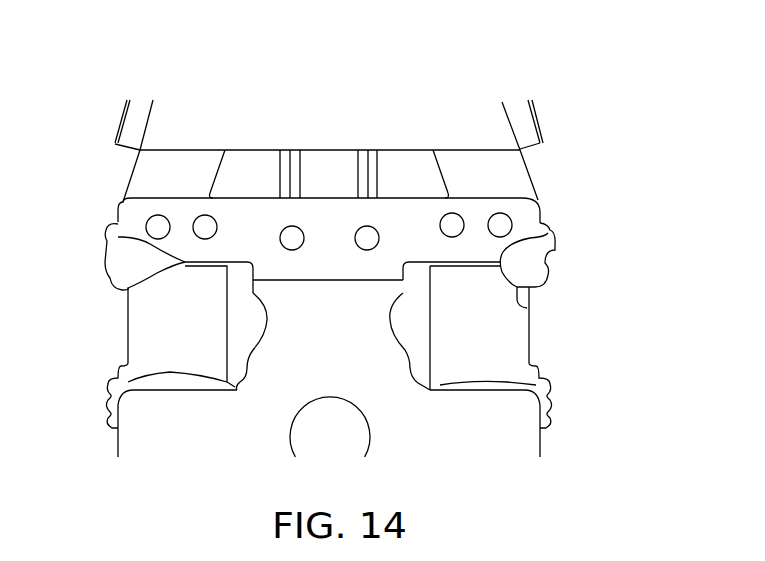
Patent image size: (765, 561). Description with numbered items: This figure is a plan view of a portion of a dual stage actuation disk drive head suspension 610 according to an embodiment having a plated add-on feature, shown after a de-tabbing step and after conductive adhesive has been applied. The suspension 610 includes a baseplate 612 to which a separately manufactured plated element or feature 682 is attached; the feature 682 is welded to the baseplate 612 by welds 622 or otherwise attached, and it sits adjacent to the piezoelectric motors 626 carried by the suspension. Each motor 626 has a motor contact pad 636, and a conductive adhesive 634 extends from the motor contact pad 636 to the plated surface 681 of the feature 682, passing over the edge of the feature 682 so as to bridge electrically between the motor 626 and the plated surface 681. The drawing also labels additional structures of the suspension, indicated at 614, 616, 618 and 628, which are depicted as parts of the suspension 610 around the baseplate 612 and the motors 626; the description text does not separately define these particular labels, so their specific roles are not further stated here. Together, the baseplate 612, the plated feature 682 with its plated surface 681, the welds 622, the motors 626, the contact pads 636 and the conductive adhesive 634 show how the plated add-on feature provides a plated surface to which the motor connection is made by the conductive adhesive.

The suspension 610 is at (207, 452).
The baseplate 612 is at (513, 448).
The flange portion 614 is at (143, 177).
The mounting arms 616 is at (473, 117).
The slots 618 is at (328, 177).
The welds 622 is at (368, 243).
The motors 626 is at (520, 338).
The lower flange 628 is at (552, 393).
The conductive adhesive 634 is at (125, 255).
The motor contact pad 636 is at (527, 308).
The plated surface 681 is at (533, 231).
The plated element or feature 682 is at (538, 208).